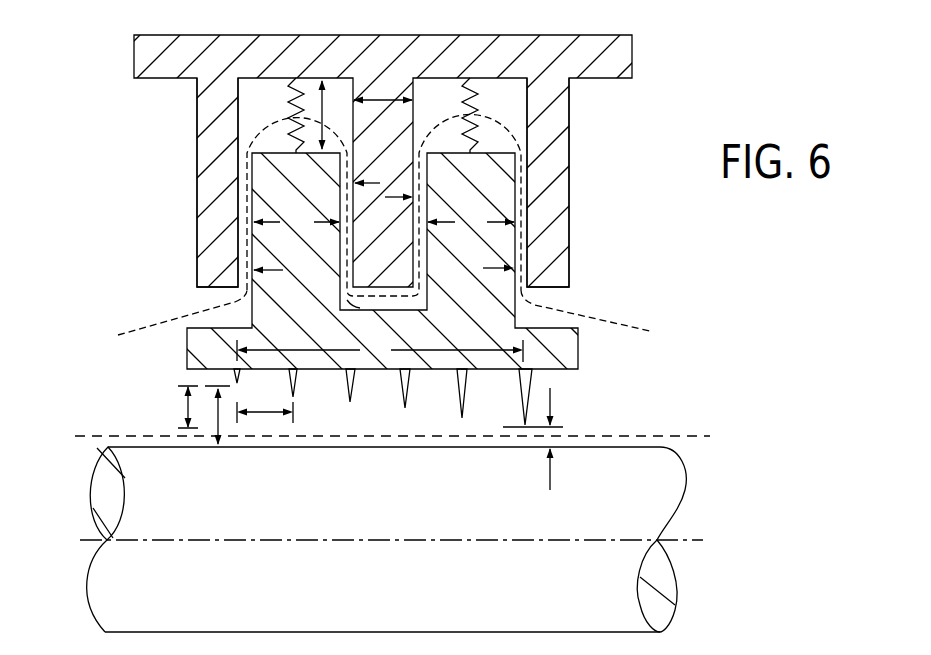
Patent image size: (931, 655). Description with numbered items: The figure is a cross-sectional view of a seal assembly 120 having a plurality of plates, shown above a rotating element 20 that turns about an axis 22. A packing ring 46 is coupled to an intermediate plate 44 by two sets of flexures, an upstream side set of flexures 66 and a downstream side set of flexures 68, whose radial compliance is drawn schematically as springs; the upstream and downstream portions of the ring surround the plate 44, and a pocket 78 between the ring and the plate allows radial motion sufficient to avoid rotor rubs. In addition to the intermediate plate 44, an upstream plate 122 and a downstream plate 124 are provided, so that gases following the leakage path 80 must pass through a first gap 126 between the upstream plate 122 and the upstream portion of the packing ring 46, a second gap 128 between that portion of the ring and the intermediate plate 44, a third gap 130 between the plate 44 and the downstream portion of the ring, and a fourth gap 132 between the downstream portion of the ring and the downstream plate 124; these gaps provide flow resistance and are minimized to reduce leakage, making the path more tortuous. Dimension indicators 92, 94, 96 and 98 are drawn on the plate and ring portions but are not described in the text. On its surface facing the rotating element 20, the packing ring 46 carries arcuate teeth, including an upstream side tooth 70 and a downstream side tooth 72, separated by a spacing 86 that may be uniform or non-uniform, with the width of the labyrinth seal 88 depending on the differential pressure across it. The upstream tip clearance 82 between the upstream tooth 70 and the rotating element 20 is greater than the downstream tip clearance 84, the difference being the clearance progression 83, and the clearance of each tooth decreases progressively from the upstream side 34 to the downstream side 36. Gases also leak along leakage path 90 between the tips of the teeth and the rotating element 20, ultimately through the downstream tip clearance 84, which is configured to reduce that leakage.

The rotating element 20 is at (100, 590).
The axis 22 is at (680, 539).
The upstream side 34 is at (163, 307).
The downstream side 36 is at (588, 307).
The intermediate plate 44 is at (398, 78).
The packing ring 46 is at (493, 250).
The upstream side set of flexures 66 is at (297, 90).
The downstream side set of flexures 68 is at (472, 85).
The upstream side tooth 70 is at (237, 376).
The downstream side tooth 72 is at (527, 382).
The pocket 78 is at (375, 298).
The leakage path 80 is at (623, 323).
The upstream tip clearance 82 is at (217, 422).
The clearance progression 83 is at (186, 406).
The downstream tip clearance 84 is at (557, 398).
The spacing 86 is at (263, 415).
The width of the labyrinth seal 88 is at (380, 351).
The leakage path 90 is at (680, 435).
The spring travel 92 is at (317, 98).
The central leg width 94 is at (382, 99).
The first tine width 96 is at (296, 223).
The second tine width 98 is at (471, 223).
The seal assembly 120 is at (686, 93).
The upstream plate 122 is at (220, 127).
The downstream plate 124 is at (547, 127).
The gap #1 126 is at (228, 270).
The gap #2 128 is at (332, 183).
The gap #3 130 is at (430, 197).
The gap #4 132 is at (541, 268).